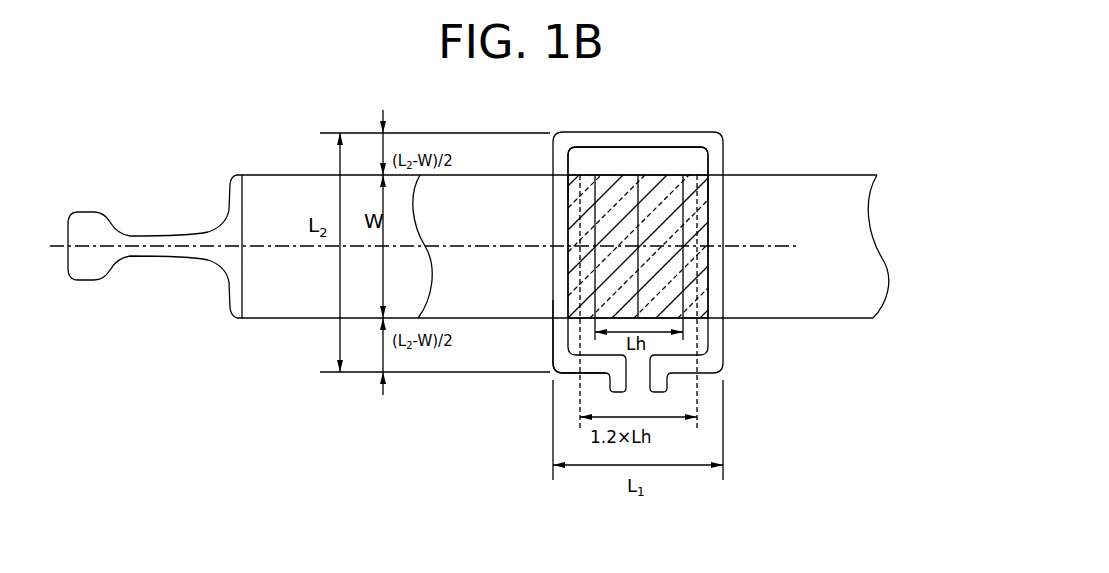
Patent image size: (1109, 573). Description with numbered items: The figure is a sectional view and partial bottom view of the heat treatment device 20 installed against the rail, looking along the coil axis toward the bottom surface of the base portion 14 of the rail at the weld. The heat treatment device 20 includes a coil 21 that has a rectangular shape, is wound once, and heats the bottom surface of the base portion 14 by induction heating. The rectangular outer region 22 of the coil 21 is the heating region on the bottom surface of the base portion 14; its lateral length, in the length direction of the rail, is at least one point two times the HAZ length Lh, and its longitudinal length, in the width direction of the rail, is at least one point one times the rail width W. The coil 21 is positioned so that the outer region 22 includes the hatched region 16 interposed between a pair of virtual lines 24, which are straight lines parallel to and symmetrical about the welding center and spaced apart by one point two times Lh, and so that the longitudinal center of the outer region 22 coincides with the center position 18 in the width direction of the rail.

The base portion 14 is at (873, 258).
The region interposed between the pair of virtual lines 16 is at (705, 270).
The center position in the width direction of the rail 18 is at (785, 247).
The heat treatment device 20 is at (731, 366).
The coil 21 is at (714, 148).
The outer region 22 is at (546, 351).
The virtual lines 24 is at (712, 192).